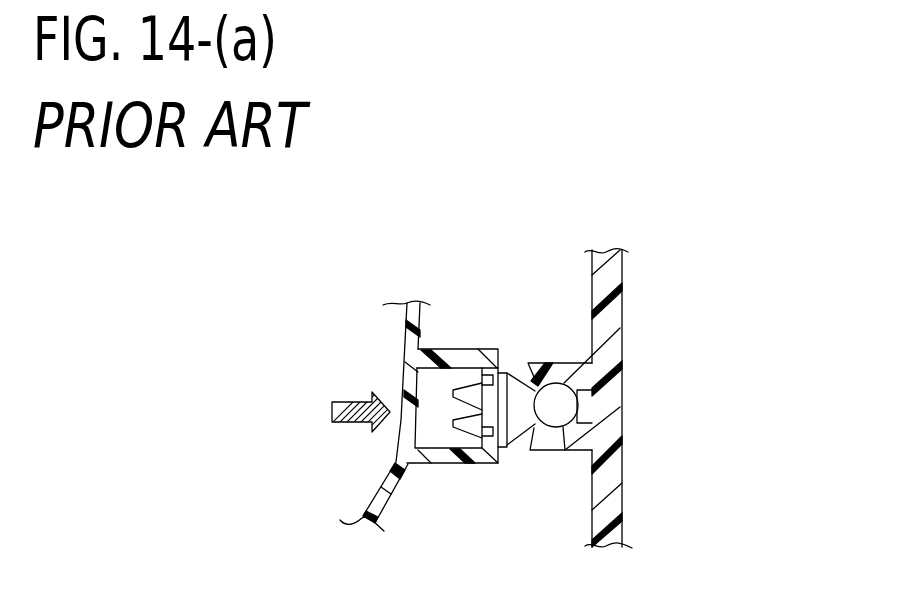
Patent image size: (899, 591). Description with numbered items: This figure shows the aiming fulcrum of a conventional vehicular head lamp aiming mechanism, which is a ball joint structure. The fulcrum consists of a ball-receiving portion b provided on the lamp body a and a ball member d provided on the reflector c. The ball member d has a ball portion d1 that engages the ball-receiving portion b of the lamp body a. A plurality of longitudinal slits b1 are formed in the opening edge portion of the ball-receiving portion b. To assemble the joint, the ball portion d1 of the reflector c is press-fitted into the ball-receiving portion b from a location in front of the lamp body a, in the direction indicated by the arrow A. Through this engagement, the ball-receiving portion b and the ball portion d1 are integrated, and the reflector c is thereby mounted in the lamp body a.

The lamp body a is at (623, 307).
The ball-receiving portion b is at (552, 360).
The longitudinal slits b1 is at (544, 438).
The reflector c is at (408, 330).
The ball member d is at (566, 411).
The ball portion d1 is at (556, 405).
The arrow A is at (350, 413).